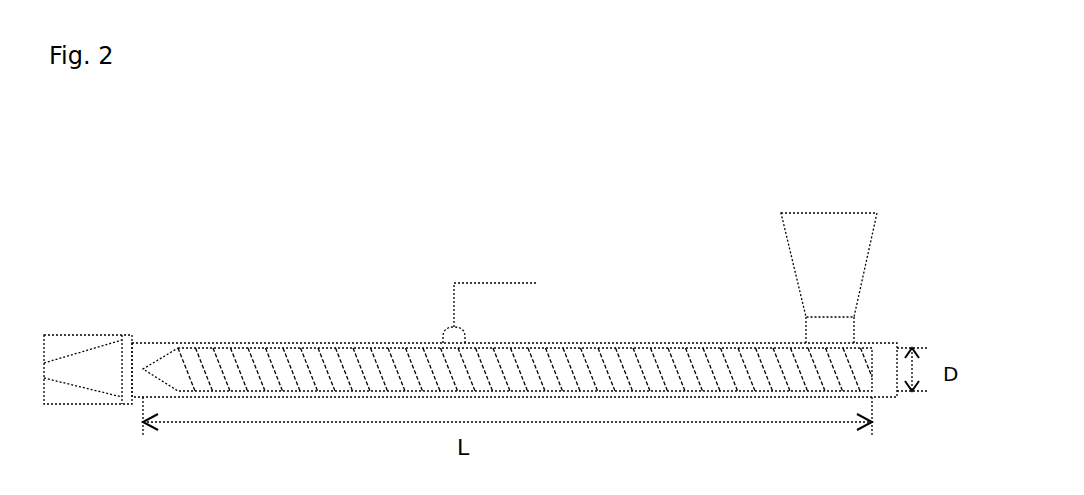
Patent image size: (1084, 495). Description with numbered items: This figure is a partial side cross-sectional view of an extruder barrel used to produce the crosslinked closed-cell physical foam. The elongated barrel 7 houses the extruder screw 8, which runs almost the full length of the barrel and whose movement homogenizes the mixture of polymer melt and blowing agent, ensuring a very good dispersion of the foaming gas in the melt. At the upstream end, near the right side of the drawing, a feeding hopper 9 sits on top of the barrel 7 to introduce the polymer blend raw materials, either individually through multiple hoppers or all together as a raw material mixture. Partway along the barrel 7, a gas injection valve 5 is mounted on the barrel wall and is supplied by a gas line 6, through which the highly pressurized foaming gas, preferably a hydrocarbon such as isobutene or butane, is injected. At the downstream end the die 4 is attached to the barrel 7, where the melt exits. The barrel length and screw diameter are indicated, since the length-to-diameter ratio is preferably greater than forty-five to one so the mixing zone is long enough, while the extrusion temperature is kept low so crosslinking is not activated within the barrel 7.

The die 4 is at (103, 348).
The gas injection valve 5 is at (413, 313).
The gas line 6 is at (531, 280).
The barrel 7 is at (514, 345).
The screw 8 is at (507, 357).
The feeding hopper(s) 9 is at (857, 255).